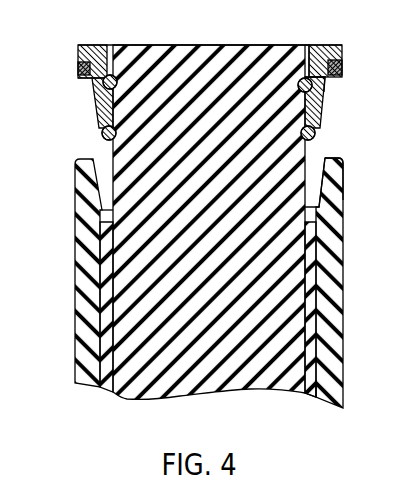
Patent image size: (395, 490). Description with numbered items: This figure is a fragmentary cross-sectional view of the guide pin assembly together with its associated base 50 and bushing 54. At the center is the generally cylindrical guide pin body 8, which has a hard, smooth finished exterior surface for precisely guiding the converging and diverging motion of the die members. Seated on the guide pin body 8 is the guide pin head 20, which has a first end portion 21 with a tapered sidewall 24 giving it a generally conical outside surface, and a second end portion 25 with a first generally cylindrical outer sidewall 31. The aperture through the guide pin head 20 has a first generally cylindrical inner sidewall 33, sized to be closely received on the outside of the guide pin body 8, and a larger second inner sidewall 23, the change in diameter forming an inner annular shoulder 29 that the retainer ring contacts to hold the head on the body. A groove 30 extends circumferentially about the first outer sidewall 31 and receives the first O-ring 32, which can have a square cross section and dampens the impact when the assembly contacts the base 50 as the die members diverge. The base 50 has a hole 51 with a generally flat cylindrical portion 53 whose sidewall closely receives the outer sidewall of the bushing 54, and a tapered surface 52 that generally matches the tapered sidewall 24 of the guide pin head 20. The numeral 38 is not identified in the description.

The guide pin body 8 is at (207, 45).
The guide pin head 20 is at (340, 44).
The first end portion 21 is at (101, 130).
The second inner sidewall 23 is at (307, 44).
The tapered sidewall 24 is at (97, 92).
The second end portion 25 is at (80, 47).
The inner annular shoulder 29 is at (323, 92).
The groove 30 is at (78, 70).
The first outer sidewall 31 is at (87, 77).
The first O-ring 32 is at (342, 65).
The first inner sidewall 33 is at (322, 110).
The upper sealing ring 38 is at (322, 84).
The base 50 is at (343, 222).
The hole 51 is at (317, 155).
The tapered surface 52 is at (332, 182).
The flat cylindrical portion 53 is at (320, 305).
The bushing 54 is at (310, 383).